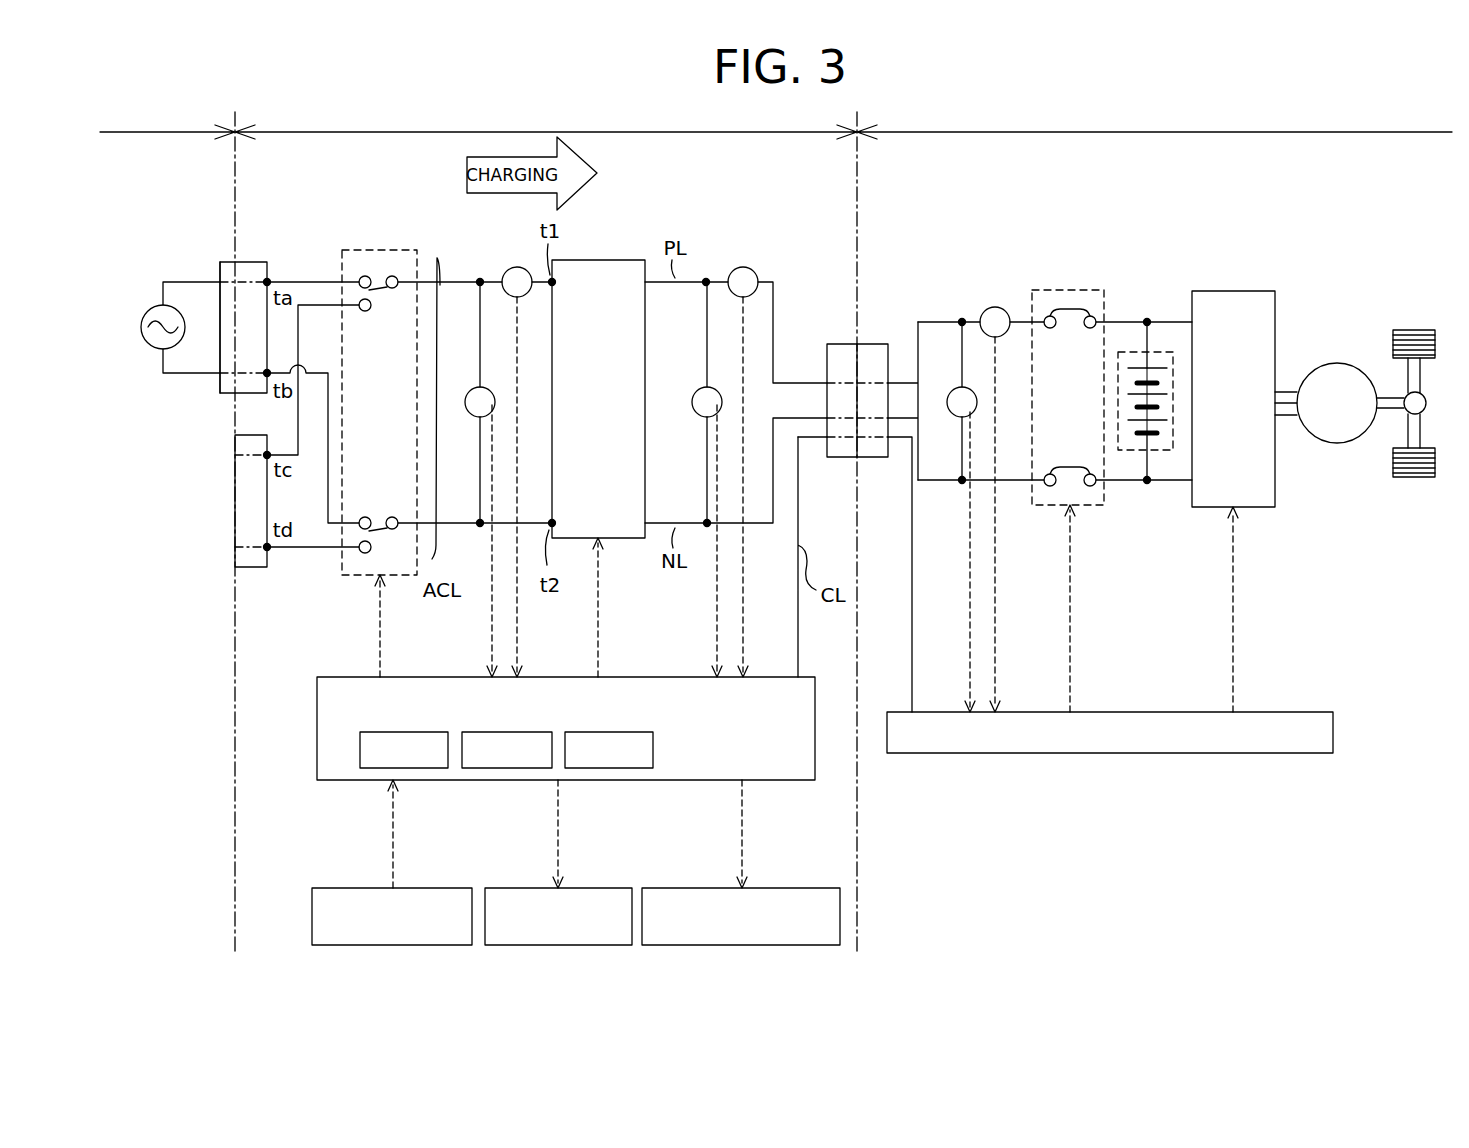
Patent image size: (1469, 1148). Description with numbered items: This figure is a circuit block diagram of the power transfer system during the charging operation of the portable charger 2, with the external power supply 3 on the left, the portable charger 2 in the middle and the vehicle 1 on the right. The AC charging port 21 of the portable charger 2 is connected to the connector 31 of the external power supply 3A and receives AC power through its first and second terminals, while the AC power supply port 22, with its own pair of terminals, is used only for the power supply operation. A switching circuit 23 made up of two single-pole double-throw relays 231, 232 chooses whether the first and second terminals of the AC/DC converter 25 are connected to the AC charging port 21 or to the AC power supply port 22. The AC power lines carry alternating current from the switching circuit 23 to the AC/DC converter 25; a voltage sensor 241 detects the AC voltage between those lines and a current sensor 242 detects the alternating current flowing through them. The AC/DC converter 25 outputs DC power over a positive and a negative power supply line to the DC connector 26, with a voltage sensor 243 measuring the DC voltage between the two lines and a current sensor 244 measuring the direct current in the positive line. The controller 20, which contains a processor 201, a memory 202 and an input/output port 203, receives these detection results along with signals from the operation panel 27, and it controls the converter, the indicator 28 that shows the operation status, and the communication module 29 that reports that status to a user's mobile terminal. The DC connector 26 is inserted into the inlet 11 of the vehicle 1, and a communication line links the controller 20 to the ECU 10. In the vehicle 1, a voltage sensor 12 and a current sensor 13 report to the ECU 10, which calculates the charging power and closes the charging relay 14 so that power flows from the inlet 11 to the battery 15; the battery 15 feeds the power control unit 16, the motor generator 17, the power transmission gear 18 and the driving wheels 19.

The vehicle 1 is at (1154, 119).
The portable charger 2 is at (546, 119).
The power supply 3 is at (167, 119).
The external power supply 3A is at (148, 314).
The electronic control unit (ECU) 10 is at (1295, 712).
The inlet 11 is at (876, 344).
The voltage sensor 12 is at (952, 390).
The current sensor 13 is at (995, 307).
The charging relay 14 is at (1084, 290).
The battery 15 is at (1163, 352).
The power control unit (PCU) 16 is at (1250, 291).
The motor generator 17 is at (1338, 363).
The power transmission gear 18 is at (1426, 396).
The driving wheels 19 is at (1415, 330).
The controller 20 is at (618, 677).
The processor 201 is at (438, 768).
The memory 202 is at (508, 768).
The input/output port 203 is at (608, 768).
The AC charging port 21 is at (268, 262).
The AC power supply port 22 is at (252, 567).
The switching circuit 23 is at (408, 250).
The relay 231 is at (380, 272).
The relay 232 is at (380, 515).
The voltage sensor 241 is at (470, 388).
The current sensor 242 is at (515, 267).
The voltage sensor 243 is at (696, 390).
The current sensor 244 is at (744, 267).
The AC/DC converter 25 is at (600, 260).
The DC connector 26 is at (839, 344).
The operation panel 27 is at (417, 888).
The indicator 28 is at (585, 888).
The communication module 29 is at (765, 888).
The connector 31 is at (225, 262).